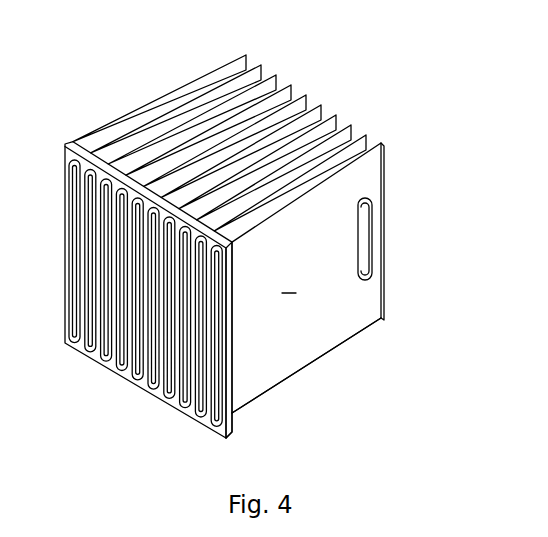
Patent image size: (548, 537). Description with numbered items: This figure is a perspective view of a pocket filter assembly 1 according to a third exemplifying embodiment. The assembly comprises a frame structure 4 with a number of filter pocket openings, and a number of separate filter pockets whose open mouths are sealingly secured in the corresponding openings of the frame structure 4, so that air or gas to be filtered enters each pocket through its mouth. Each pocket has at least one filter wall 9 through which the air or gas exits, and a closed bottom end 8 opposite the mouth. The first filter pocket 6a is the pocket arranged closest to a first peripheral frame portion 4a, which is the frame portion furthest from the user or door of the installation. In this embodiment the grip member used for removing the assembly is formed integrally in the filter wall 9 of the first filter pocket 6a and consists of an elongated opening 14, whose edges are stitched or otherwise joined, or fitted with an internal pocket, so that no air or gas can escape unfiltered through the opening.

The pocket filter assembly 1 is at (105, 51).
The frame structure 4 is at (73, 141).
The first peripheral frame portion 4a is at (225, 390).
The closed bottom end 8 is at (383, 183).
The filter wall 9 is at (289, 283).
The elongated opening 14 is at (363, 235).
The first filter pocket 6a is at (291, 350).